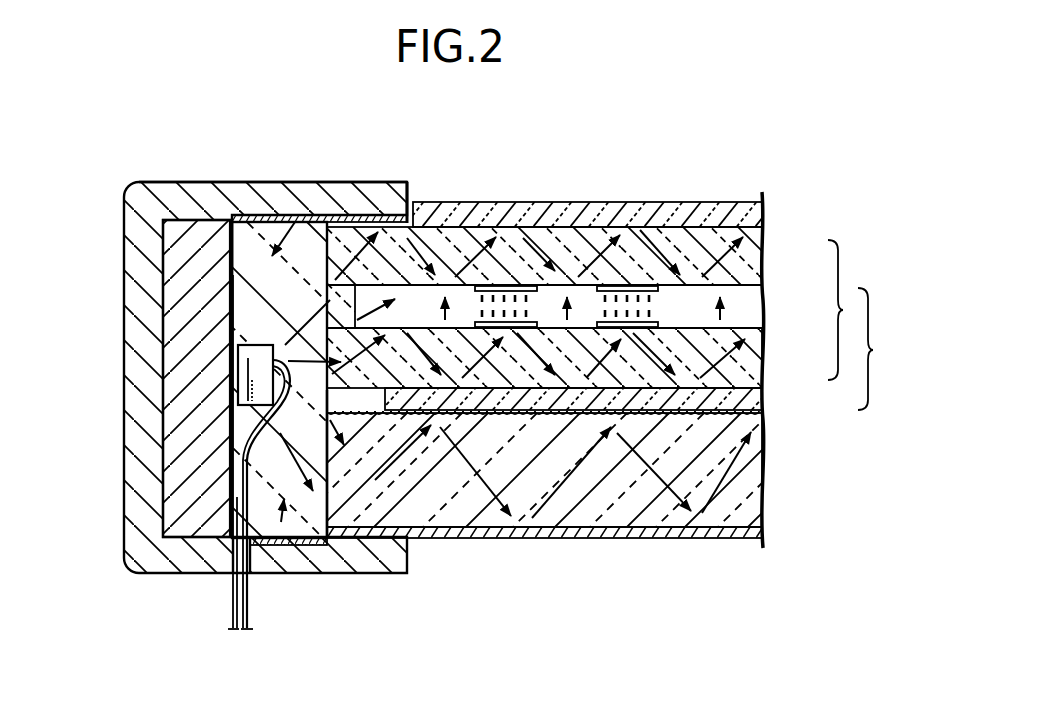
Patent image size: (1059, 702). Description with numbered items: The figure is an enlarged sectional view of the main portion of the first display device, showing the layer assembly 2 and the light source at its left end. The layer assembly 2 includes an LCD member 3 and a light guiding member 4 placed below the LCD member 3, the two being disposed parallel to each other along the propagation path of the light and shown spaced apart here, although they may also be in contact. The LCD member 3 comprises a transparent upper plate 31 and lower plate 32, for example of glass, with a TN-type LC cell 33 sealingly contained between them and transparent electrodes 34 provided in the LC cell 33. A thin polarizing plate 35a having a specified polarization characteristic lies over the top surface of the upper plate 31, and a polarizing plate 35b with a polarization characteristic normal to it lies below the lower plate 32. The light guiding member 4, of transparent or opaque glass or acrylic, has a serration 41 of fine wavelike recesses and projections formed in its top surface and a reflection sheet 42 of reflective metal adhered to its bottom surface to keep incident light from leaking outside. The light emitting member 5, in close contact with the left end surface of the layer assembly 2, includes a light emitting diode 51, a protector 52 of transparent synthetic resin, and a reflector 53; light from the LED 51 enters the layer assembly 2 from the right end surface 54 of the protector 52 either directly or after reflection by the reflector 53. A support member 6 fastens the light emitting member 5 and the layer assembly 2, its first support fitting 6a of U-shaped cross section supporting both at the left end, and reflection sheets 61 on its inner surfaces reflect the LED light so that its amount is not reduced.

The layer assembly 2 is at (874, 349).
The LCD member 3 is at (842, 310).
The upper plate 31 is at (763, 257).
The lower plate 32 is at (757, 362).
The LC cell 33 is at (748, 307).
The transparent electrodes 34 is at (658, 328).
The polarizing plate 35a is at (532, 204).
The polarizing plate 35b is at (540, 400).
The light guiding member 4 is at (747, 485).
The serration 41 is at (490, 417).
The reflection sheet 42 is at (619, 538).
The light emitting member 5 is at (187, 488).
The light emitting diode 51 is at (248, 377).
The protector 52 is at (297, 217).
The reflector 53 is at (232, 265).
The right end surface 54 is at (327, 390).
The support member 6 is at (265, 335).
The first support fitting 6a is at (259, 192).
The reflection sheets 61 is at (373, 216).